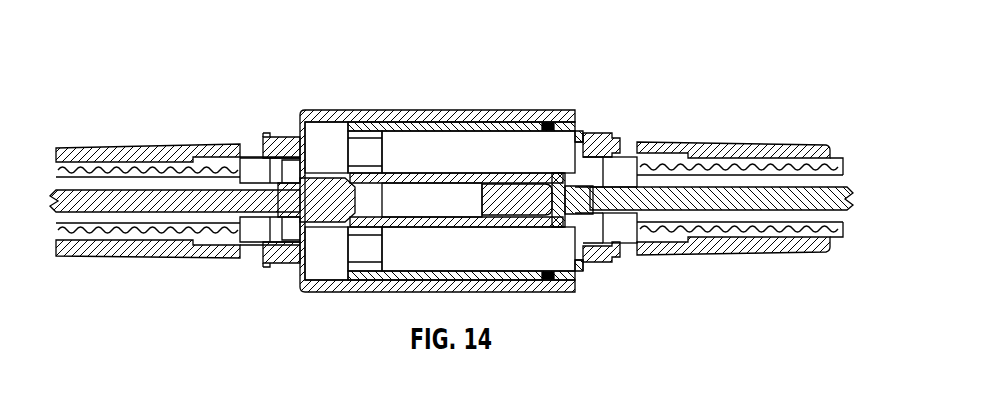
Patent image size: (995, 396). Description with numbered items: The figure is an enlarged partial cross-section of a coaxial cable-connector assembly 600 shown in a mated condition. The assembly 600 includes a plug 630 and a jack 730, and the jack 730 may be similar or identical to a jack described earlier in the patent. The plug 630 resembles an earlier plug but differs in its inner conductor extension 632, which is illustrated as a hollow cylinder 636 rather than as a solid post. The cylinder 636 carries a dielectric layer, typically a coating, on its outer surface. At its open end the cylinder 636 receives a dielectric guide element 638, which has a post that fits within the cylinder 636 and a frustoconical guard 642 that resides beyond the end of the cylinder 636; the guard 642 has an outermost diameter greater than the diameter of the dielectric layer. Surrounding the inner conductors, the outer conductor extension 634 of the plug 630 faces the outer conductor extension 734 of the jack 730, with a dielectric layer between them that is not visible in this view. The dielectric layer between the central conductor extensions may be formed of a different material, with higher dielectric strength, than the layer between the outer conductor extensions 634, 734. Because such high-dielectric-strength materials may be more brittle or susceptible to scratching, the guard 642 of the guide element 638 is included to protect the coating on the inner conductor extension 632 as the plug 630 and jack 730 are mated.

The assembly 600 is at (718, 60).
The plug 630 is at (176, 87).
The inner conductor extension 632 is at (330, 195).
The outer conductor extension 634 is at (448, 118).
The hollow cylinder 636 is at (366, 175).
The dielectric guide element 638 is at (512, 202).
The frustoconical guard 642 is at (580, 178).
The jack 730 is at (606, 80).
The outer conductor extension 734 is at (578, 118).